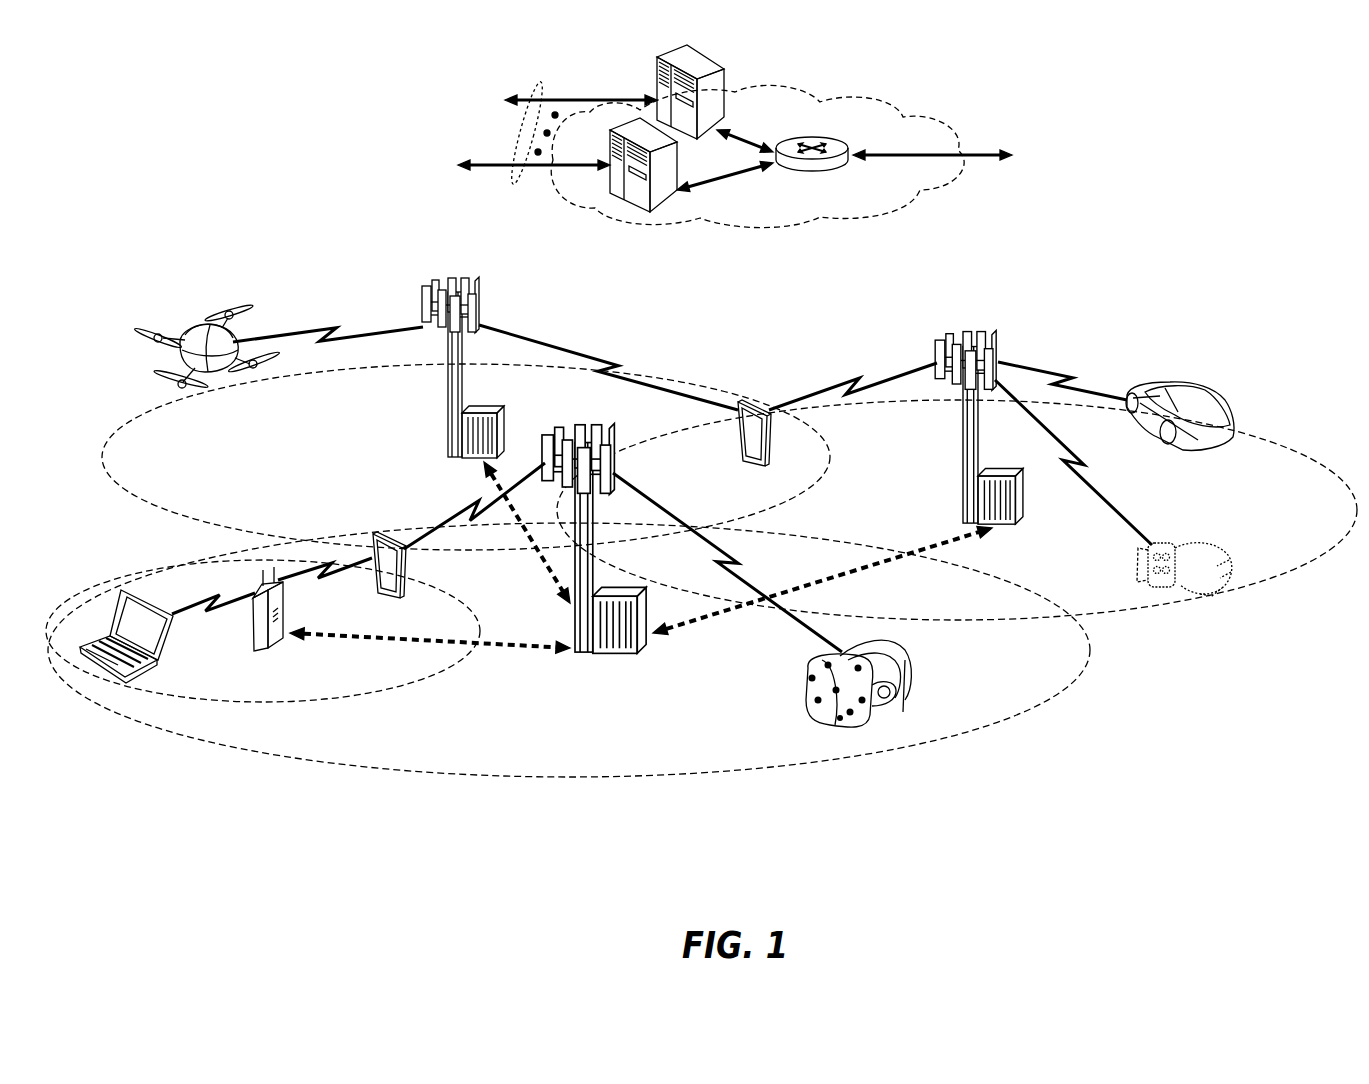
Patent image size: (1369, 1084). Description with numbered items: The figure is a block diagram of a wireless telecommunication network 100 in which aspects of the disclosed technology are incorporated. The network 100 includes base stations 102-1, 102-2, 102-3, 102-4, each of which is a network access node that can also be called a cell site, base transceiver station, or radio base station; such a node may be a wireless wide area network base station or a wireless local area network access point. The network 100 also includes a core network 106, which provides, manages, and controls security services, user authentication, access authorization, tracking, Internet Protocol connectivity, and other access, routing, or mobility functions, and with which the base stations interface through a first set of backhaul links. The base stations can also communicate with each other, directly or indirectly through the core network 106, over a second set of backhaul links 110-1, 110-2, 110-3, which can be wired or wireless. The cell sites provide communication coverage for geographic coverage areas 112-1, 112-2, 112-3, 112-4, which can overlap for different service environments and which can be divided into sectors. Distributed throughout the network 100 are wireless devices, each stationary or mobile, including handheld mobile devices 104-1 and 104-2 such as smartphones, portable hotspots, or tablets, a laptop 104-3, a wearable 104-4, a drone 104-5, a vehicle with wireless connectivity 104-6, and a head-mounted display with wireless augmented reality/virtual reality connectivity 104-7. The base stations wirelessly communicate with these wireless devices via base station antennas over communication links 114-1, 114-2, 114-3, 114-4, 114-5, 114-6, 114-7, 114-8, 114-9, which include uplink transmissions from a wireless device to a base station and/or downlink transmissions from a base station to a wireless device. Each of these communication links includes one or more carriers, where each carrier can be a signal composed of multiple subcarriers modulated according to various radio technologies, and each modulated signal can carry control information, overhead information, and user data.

The wireless telecommunication network 100 is at (1260, 138).
The core network 106 is at (845, 224).
The base station 102-1 is at (580, 660).
The base station 102-2 is at (448, 412).
The base station 102-3 is at (963, 447).
The base station 102-4 is at (251, 649).
The handheld mobile device 104-1 is at (405, 588).
The handheld mobile device 104-2 is at (740, 447).
The laptop 104-3 is at (101, 685).
The wearable 104-4 is at (1168, 548).
The drone 104-5 is at (215, 380).
The vehicle with wireless connectivity 104-6 is at (1208, 386).
The head-mounted display with wireless AR/VR connectivity 104-7 is at (915, 666).
The backhaul link 110-1 is at (338, 648).
The backhaul link 110-2 is at (885, 580).
The backhaul link 110-3 is at (540, 576).
The geographic coverage area 112-1 is at (515, 780).
The geographic coverage area 112-2 is at (390, 700).
The geographic coverage area 112-3 is at (165, 513).
The geographic coverage area 112-4 is at (1262, 443).
The communication link 114-1 is at (745, 563).
The communication link 114-2 is at (462, 510).
The communication link 114-3 is at (185, 620).
The communication link 114-4 is at (330, 588).
The communication link 114-5 is at (333, 323).
The communication link 114-6 is at (617, 358).
The communication link 114-7 is at (855, 380).
The communication link 114-8 is at (1088, 478).
The communication link 114-9 is at (1065, 373).